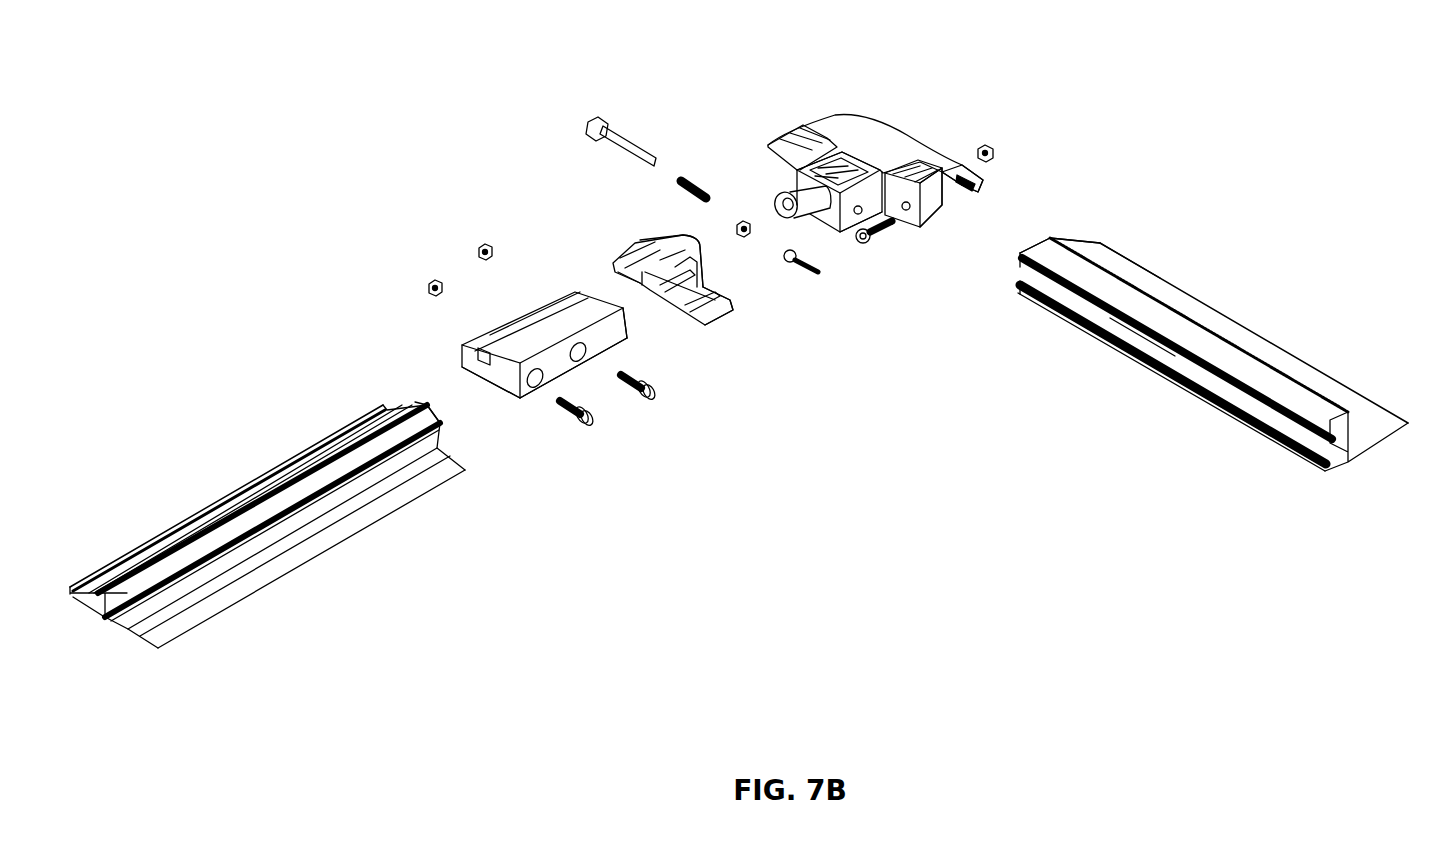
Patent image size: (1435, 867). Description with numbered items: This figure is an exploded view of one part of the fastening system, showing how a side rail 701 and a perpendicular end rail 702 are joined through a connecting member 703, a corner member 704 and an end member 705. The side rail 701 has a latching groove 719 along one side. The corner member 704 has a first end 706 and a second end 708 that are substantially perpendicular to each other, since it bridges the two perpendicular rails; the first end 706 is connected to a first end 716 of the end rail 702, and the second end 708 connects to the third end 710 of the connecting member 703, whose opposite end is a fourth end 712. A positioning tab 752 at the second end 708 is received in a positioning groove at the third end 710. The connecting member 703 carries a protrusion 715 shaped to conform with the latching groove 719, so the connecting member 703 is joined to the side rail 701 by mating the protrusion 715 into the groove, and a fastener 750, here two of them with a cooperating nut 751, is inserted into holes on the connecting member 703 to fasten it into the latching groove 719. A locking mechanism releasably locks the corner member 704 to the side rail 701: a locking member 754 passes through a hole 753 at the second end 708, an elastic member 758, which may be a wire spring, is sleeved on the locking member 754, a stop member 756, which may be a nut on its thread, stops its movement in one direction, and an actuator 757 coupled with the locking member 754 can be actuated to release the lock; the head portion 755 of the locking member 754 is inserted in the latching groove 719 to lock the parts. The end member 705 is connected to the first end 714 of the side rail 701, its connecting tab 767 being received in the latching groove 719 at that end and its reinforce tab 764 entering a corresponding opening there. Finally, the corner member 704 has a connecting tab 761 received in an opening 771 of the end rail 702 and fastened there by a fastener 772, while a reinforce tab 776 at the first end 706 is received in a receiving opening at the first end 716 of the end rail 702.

The side rail 701 is at (200, 525).
The end rail 702 is at (1173, 300).
The connecting member 703 is at (572, 310).
The corner member 704 is at (880, 130).
The end member 705 is at (722, 318).
The first end 706 is at (927, 160).
The second end 708 is at (838, 213).
The third end 710 is at (623, 337).
The fourth end 712 is at (507, 377).
The first end 714 is at (422, 408).
The protrusion 715 is at (467, 357).
The first end 716 is at (1053, 240).
The latching groove 719 is at (393, 460).
The fastener 750 is at (653, 395).
The nut 751 is at (435, 280).
The positioning tab 752 is at (795, 195).
The hole 753 is at (892, 232).
The locking member 754 is at (638, 147).
The head portion 755 is at (595, 125).
The stop member 756 is at (750, 233).
The actuator 757 is at (818, 273).
The elastic member 758 is at (700, 183).
The connecting tab 761 is at (935, 222).
The reinforce tab 764 is at (633, 257).
The connecting tab 767 is at (672, 258).
The opening 771 is at (1143, 335).
The fastener 772 is at (937, 225).
The reinforce tab 776 is at (967, 190).